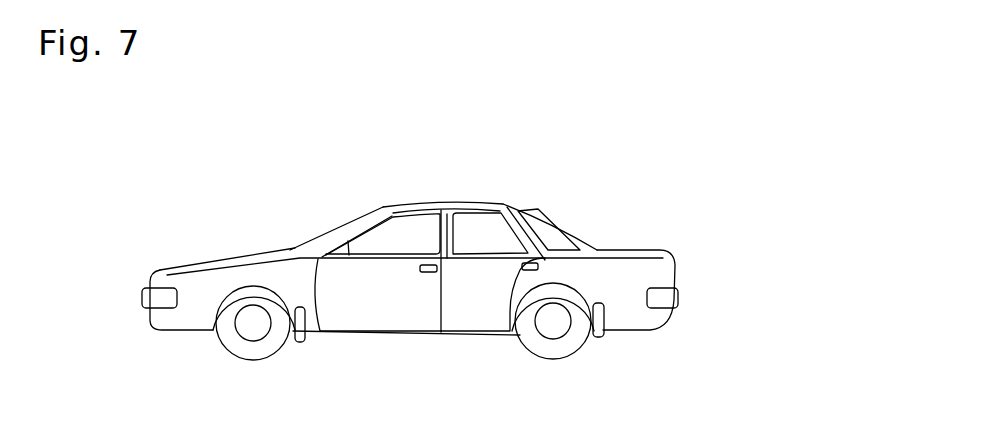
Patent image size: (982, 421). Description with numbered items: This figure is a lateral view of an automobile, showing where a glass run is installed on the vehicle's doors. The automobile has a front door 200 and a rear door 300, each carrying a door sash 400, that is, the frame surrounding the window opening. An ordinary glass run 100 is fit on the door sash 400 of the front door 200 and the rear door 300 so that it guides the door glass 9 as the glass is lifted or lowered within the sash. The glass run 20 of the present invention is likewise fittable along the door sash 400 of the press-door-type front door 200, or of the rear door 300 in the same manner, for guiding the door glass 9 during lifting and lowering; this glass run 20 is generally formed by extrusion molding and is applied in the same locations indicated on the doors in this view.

The door glass 9 is at (347, 218).
The glass run 100 is at (387, 216).
The door sash 400 is at (417, 207).
The glass run 20 is at (439, 214).
The front door 200 is at (360, 315).
The rear door 300 is at (465, 315).